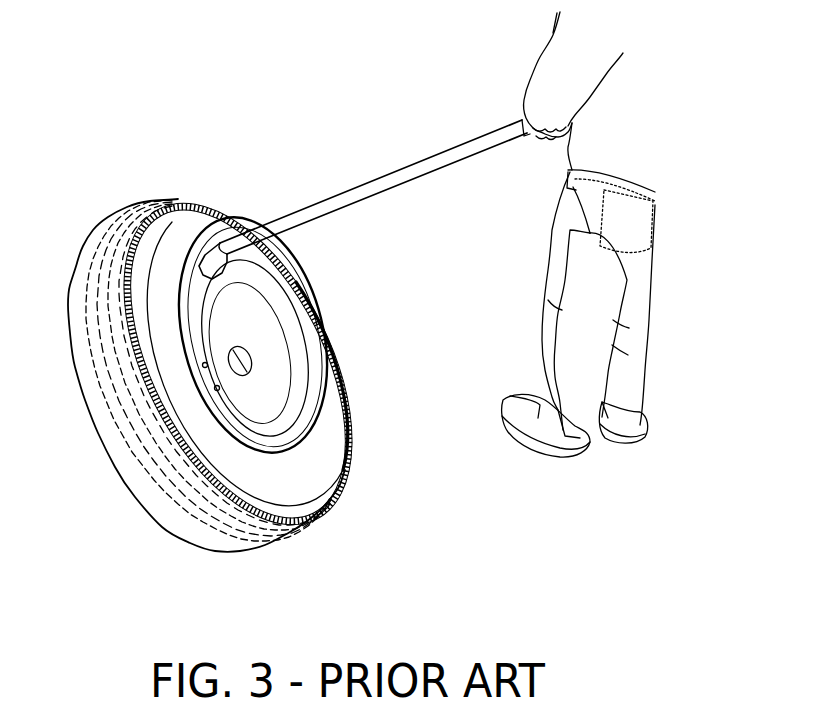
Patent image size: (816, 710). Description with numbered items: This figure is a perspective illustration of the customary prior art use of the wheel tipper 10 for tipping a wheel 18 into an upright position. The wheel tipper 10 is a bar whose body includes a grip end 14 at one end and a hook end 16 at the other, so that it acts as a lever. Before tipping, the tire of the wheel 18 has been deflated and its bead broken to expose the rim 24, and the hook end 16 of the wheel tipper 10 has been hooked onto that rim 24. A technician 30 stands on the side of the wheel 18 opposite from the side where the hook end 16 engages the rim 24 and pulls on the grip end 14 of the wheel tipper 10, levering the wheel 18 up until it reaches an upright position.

The wheel tipper 10 is at (354, 155).
The grip end 14 is at (518, 113).
The hook end 16 is at (213, 256).
The wheel 18 is at (122, 544).
The rim 24 is at (322, 428).
The technician 30 is at (512, 55).